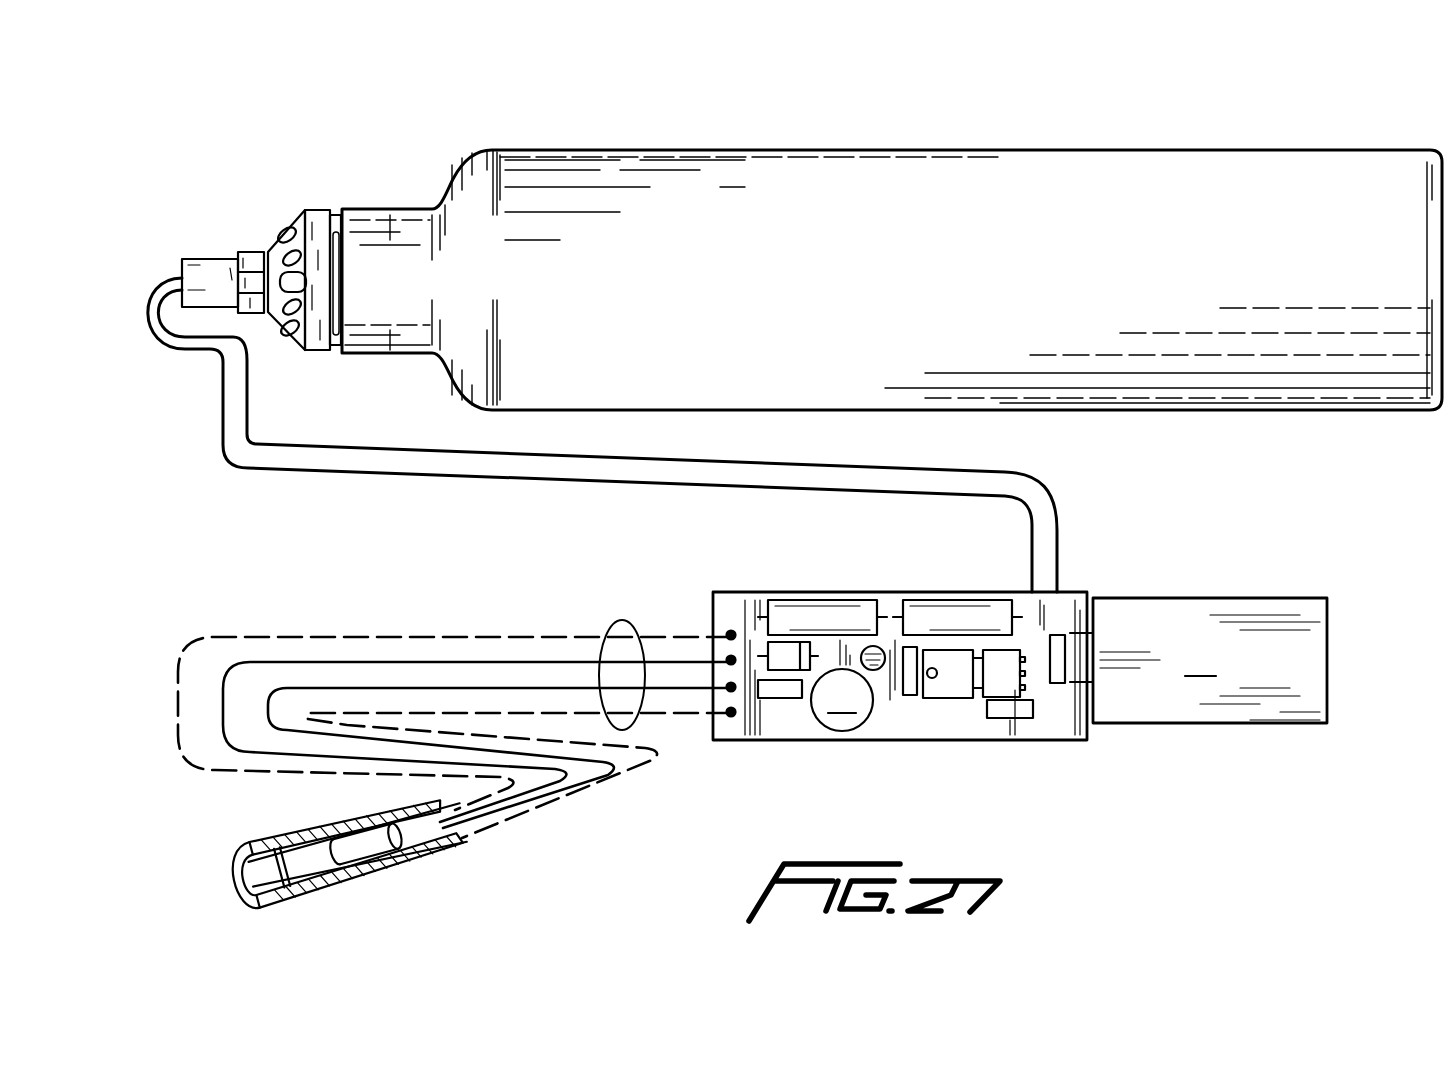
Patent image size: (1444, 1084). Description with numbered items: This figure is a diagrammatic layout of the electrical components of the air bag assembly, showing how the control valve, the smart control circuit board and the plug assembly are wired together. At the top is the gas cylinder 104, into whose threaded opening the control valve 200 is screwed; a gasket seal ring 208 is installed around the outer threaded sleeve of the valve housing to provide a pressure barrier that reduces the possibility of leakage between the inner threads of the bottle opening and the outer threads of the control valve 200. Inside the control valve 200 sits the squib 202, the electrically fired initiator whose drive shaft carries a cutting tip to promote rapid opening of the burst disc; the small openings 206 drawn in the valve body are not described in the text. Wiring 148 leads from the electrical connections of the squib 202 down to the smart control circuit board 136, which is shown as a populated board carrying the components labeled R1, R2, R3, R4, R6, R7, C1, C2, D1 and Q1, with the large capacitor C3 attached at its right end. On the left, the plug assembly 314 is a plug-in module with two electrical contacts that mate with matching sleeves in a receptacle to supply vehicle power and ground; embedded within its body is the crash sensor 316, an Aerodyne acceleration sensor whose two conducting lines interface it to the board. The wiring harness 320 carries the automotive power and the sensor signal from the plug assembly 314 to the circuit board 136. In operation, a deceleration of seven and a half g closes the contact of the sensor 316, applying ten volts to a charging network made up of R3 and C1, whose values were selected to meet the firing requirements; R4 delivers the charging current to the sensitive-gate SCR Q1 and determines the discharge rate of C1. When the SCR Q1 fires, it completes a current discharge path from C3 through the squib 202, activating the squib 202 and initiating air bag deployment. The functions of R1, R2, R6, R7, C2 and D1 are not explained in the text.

The gas cylinder 104 is at (622, 146).
The control valve 200 is at (303, 204).
The squib 202 is at (236, 244).
The orifices 206 is at (297, 340).
The gasket seal ring 208 is at (337, 207).
The wiring 148 is at (424, 477).
The smart control circuit board 136 is at (826, 748).
The wiring harness 320 is at (611, 614).
The plug assembly 314 is at (220, 850).
The crash sensor 316 is at (370, 858).
The resistor R1 is at (830, 603).
The resistor R2 is at (952, 603).
The resistor R3 is at (770, 700).
The resistor R4 is at (911, 697).
The resistor R6 is at (1022, 720).
The resistor R7 is at (1057, 635).
The capacitor C1 is at (842, 700).
The capacitor C2 is at (875, 671).
The capacitor C3 is at (1210, 660).
The diode D1 is at (764, 646).
The SCR Q1 is at (955, 700).